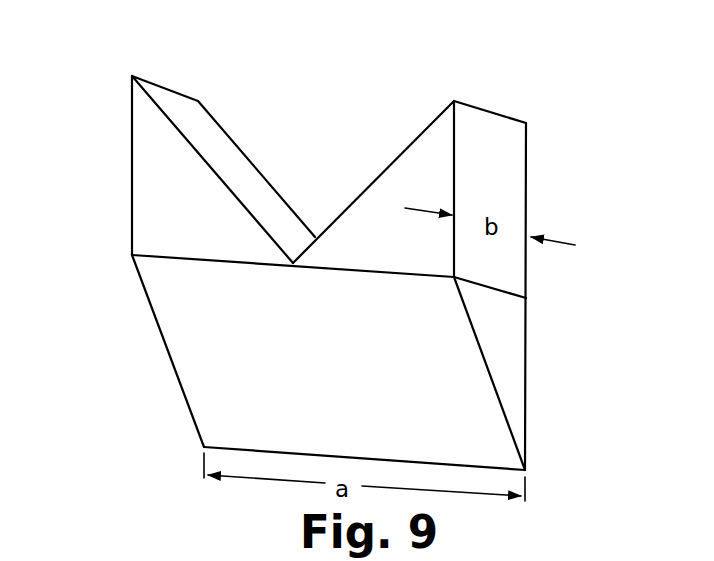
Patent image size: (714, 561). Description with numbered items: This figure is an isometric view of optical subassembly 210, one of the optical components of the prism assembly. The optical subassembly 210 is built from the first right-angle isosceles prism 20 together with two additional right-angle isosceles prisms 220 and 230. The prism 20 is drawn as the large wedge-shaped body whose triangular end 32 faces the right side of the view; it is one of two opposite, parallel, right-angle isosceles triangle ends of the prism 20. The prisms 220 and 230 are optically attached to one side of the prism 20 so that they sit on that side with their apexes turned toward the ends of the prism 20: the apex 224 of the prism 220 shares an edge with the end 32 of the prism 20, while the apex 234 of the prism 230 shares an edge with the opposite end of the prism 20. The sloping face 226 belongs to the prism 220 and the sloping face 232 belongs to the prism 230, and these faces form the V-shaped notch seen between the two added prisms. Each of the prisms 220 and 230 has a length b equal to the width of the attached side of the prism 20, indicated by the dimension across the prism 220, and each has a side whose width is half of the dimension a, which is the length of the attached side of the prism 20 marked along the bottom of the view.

The optical subassembly 210 is at (322, 79).
The side of prism 230 232 is at (240, 173).
The right-angle isosceles prism 230 is at (131, 201).
The apex of prism 230 234 is at (132, 255).
The side of prism 220 226 is at (502, 133).
The right-angle isosceles prism 220 is at (527, 167).
The apex of prism 220 224 is at (492, 289).
The triangle end of prism 20 32 is at (510, 348).
The first right-angle isosceles prism 20 is at (527, 408).